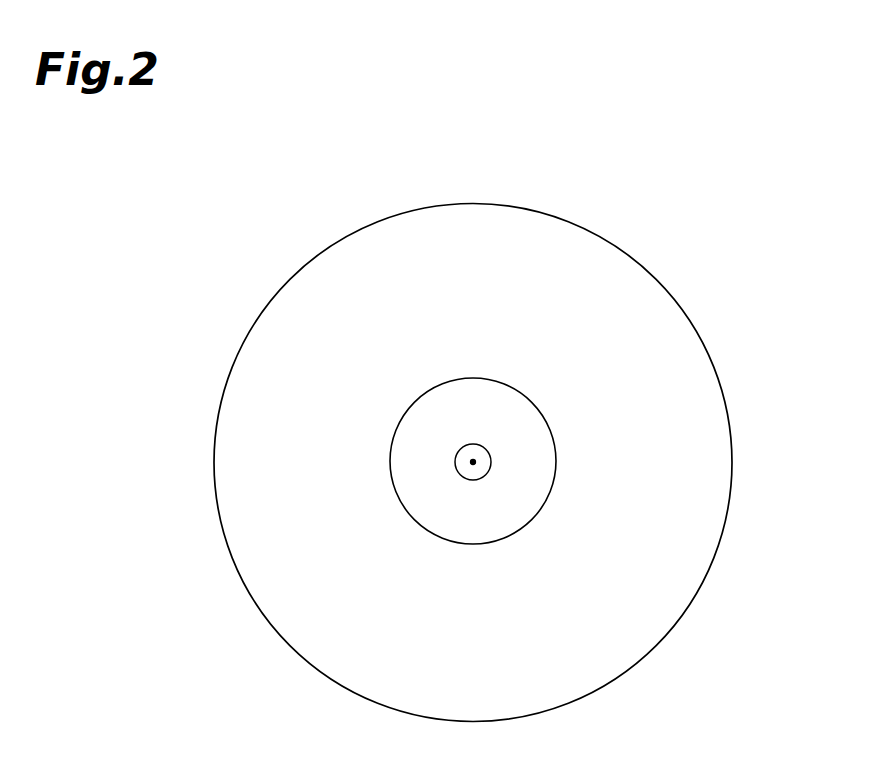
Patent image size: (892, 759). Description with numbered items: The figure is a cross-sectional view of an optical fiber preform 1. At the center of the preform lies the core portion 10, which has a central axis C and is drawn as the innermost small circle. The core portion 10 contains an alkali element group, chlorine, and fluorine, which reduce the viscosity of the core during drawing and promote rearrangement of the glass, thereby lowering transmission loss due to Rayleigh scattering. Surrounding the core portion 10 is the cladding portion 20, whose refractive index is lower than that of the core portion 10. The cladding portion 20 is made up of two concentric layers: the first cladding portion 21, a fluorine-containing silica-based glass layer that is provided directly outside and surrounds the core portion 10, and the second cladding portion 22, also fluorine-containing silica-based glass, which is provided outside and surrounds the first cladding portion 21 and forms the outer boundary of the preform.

The optical fiber preform 1 is at (503, 418).
The core portion 10 is at (473, 462).
The cladding portion 20 is at (527, 463).
The first cladding portion 21 is at (538, 457).
The second cladding portion 22 is at (714, 500).
The central axis C is at (473, 462).